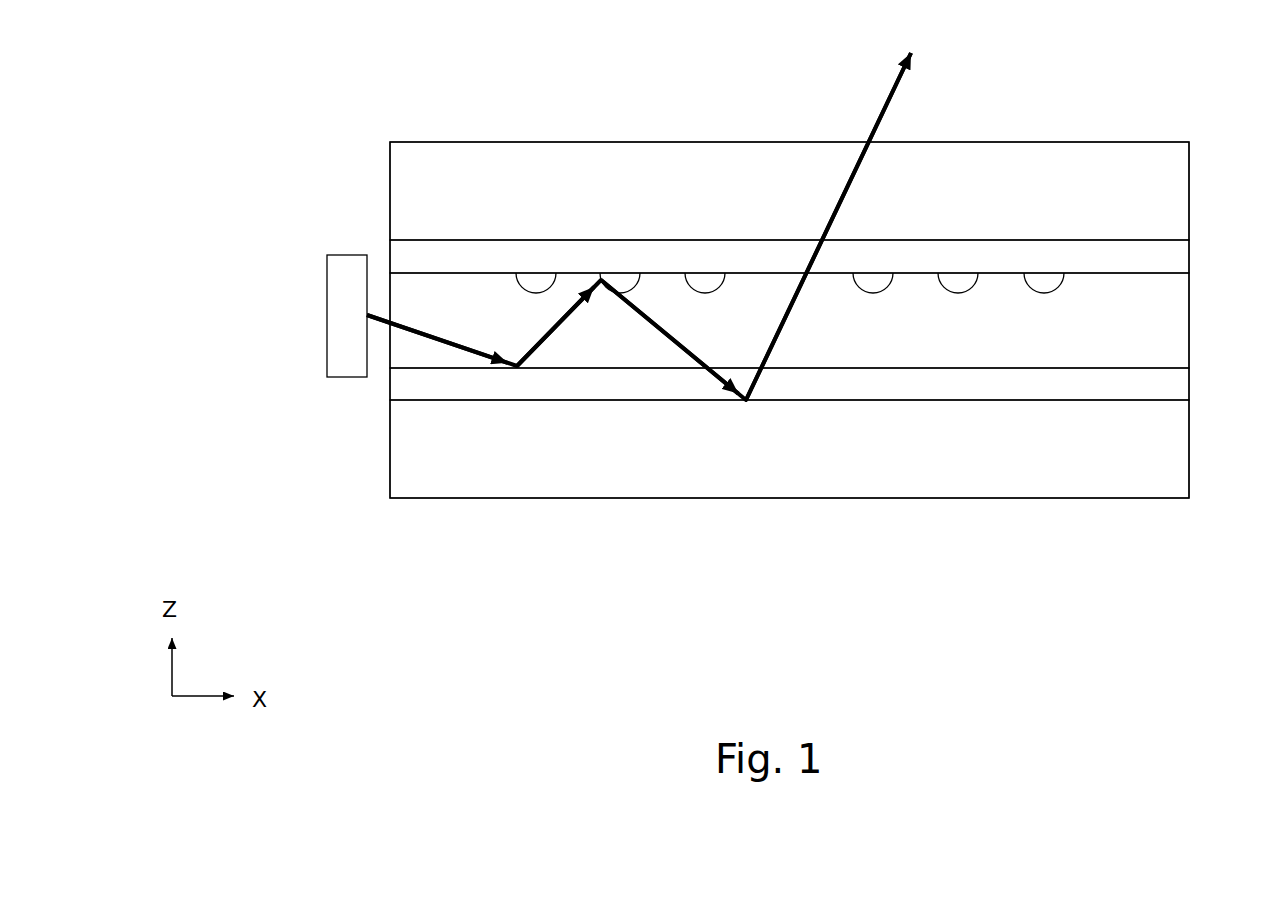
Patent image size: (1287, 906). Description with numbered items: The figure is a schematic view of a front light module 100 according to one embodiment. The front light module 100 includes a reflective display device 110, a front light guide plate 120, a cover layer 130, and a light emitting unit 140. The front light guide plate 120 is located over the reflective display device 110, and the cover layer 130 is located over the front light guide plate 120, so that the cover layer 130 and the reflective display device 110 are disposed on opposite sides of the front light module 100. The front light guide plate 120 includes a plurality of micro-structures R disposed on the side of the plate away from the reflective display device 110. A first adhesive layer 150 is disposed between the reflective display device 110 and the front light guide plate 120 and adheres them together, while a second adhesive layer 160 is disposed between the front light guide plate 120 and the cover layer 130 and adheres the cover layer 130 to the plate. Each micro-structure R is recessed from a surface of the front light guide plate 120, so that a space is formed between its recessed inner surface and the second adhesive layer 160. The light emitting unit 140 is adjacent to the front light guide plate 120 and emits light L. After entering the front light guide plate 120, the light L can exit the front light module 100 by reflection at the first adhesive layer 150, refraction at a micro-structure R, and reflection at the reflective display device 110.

The front light module 100 is at (267, 63).
The reflective display device 110 is at (1174, 450).
The front light guide plate 120 is at (1174, 320).
The cover layer 130 is at (1174, 190).
The light emitting unit 140 is at (332, 315).
The first adhesive layer 150 is at (1174, 385).
The second adhesive layer 160 is at (1174, 257).
The light L is at (438, 345).
The micro-structure R is at (536, 300).